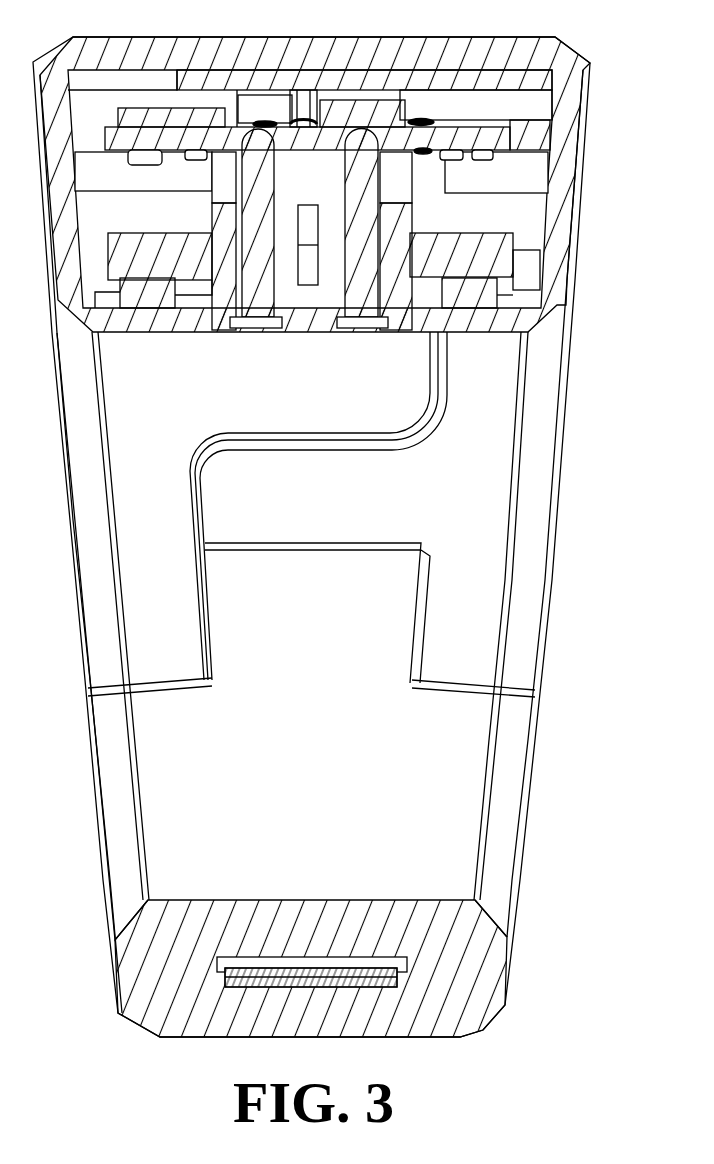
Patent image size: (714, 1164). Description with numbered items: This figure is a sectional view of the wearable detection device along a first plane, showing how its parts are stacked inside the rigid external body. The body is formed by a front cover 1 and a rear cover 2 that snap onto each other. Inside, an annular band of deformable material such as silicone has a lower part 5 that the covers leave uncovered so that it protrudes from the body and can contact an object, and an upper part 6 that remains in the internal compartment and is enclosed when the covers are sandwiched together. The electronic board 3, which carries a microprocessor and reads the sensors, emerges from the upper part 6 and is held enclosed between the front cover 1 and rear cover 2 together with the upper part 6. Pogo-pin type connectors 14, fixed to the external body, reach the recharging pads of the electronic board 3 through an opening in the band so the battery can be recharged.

The front cover 1 is at (475, 515).
The rear cover 2 is at (154, 523).
The electronic board 3 is at (497, 138).
The lower part 5 is at (313, 830).
The upper part 6 is at (163, 323).
The connectors 14 is at (362, 310).